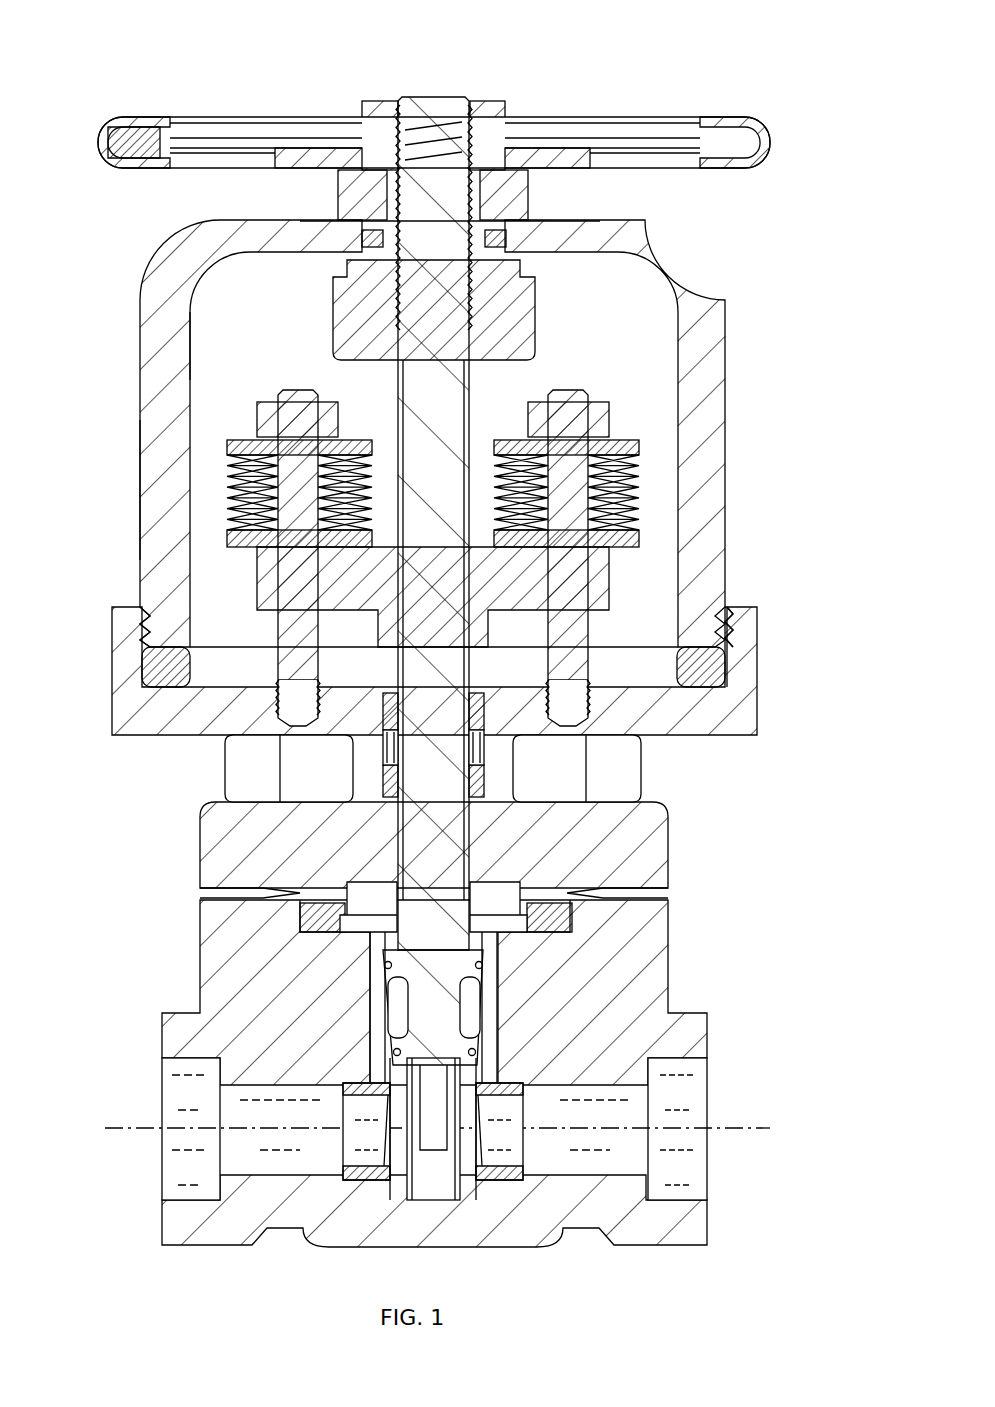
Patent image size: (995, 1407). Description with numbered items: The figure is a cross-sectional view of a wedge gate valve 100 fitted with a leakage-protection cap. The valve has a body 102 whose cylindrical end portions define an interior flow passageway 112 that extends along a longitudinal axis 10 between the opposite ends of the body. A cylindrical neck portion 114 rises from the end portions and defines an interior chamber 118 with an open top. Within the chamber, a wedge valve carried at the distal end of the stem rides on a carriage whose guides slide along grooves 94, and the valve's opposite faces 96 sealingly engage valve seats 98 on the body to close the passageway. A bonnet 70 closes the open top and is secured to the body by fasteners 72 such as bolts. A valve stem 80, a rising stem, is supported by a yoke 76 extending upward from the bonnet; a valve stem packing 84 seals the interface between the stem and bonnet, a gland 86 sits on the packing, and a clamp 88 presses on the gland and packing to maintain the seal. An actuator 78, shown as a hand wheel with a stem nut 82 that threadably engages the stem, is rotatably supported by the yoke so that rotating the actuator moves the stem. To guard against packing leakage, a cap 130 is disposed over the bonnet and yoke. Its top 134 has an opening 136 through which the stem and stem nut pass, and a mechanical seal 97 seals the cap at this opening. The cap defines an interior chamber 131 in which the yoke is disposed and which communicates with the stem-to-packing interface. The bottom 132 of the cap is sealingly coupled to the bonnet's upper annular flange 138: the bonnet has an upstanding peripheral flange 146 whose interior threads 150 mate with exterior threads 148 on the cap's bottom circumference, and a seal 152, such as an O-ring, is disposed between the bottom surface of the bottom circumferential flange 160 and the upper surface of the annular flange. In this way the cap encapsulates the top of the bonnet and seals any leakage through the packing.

The wedge gate valve 100 is at (185, 58).
The stem nut 82 is at (443, 97).
The actuator 78 is at (625, 118).
The opening 136 is at (365, 185).
The mechanical seal 97 is at (500, 245).
The top of the cap 134 is at (655, 232).
The yoke 76 is at (536, 324).
The cap 130 is at (726, 340).
The interior chamber of the cap 131 is at (212, 387).
The valve stem 80 is at (405, 400).
The bottom of the cap 132 is at (141, 492).
The bottom circumferential flange 160 is at (150, 610).
The seal 152 is at (165, 667).
The clamp 88 is at (258, 583).
The gland 86 is at (352, 632).
The exterior threads 148 is at (740, 608).
The interior threads 150 is at (729, 627).
The upstanding peripheral flange 146 is at (758, 645).
The upper annular flange 138 is at (757, 705).
The valve stem packing 84 is at (345, 737).
The fasteners 72 is at (641, 765).
The bonnet 70 is at (668, 842).
The cylindrical neck portion 114 is at (200, 967).
The interior chamber 118 is at (378, 1035).
The opposite faces 96 is at (480, 1032).
The valve seats 98 is at (390, 1122).
The longitudinal axis 10 is at (120, 1130).
The interior flow passageway 112 is at (708, 1152).
The body 102 is at (232, 1246).
The grooves 94 is at (432, 1190).